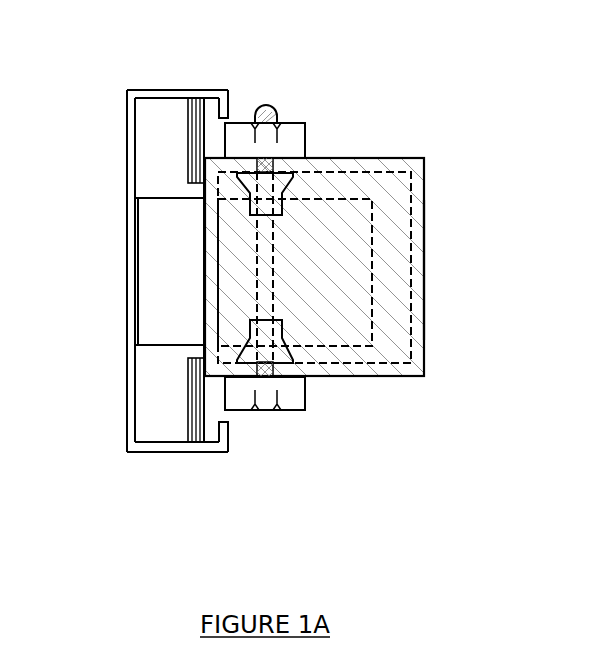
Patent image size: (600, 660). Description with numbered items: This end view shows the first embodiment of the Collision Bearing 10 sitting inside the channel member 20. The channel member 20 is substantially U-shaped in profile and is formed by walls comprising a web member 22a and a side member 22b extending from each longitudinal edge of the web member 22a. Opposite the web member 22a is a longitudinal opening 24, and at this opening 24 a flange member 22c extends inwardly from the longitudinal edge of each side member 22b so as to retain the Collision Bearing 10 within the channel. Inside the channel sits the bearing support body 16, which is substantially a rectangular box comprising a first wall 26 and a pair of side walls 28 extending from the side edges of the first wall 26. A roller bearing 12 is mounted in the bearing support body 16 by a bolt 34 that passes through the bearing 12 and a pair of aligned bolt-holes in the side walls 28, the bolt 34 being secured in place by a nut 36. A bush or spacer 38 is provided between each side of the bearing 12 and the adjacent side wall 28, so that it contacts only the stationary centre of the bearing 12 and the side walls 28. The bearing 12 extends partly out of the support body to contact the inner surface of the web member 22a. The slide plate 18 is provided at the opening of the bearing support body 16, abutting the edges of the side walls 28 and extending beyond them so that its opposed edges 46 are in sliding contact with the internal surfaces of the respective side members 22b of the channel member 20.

The Collision Bearing 10 is at (445, 287).
The roller bearing 12 is at (177, 310).
The bearing support body 16 is at (427, 322).
The slide plate 18 is at (183, 145).
The channel member 20 is at (110, 97).
The web member 22a is at (132, 167).
The side member 22b is at (212, 88).
The flange member 22c is at (230, 102).
The longitudinal opening 24 is at (221, 410).
The first wall 26 is at (424, 268).
The side wall 28 is at (403, 167).
The bolt 34 is at (292, 400).
The nut 36 is at (292, 140).
The bush or spacer 38 is at (284, 180).
The opposed edges 46 is at (188, 97).